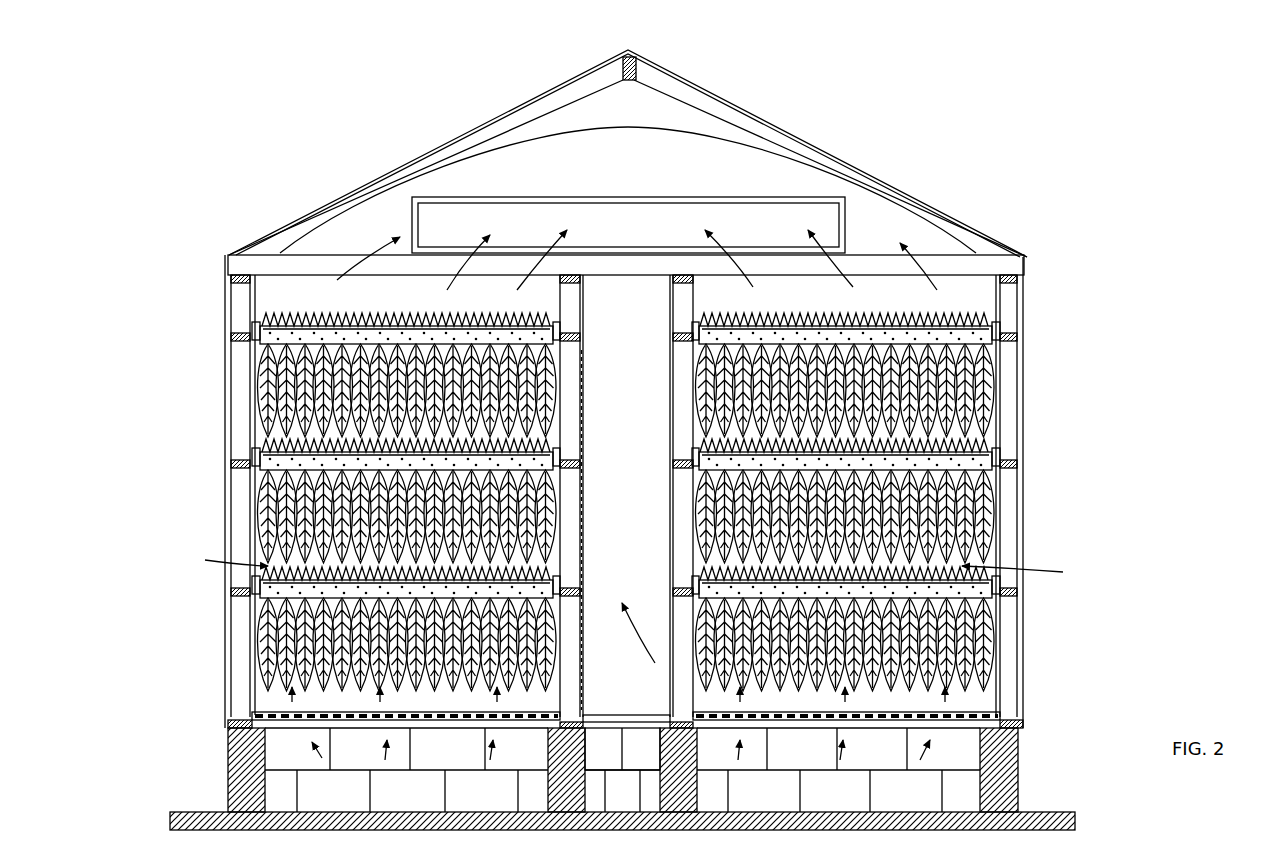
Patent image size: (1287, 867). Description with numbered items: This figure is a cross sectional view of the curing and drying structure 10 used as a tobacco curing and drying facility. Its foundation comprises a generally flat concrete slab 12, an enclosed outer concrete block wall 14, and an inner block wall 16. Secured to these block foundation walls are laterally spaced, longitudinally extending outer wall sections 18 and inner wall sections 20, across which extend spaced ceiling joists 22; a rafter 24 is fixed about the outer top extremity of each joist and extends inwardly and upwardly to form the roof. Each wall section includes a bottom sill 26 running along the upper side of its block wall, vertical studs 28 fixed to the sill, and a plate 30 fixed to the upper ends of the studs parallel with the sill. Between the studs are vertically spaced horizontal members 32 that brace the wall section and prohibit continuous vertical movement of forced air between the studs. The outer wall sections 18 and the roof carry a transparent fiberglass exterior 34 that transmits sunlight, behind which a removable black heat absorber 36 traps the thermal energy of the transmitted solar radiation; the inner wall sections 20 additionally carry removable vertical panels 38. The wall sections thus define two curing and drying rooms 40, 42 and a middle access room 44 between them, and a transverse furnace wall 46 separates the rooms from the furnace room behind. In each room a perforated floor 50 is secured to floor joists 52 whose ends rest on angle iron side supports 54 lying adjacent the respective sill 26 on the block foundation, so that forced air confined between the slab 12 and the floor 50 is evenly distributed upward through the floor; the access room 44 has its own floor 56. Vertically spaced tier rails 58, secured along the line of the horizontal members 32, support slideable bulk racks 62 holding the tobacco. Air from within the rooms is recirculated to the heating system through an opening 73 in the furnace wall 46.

The curing and drying structure 10 is at (445, 78).
The concrete slab 12 is at (211, 827).
The outer concrete block wall 14 is at (230, 758).
The inner block wall 16 is at (542, 770).
The outer wall sections 18 is at (215, 315).
The inner wall sections 20 is at (664, 345).
The ceiling joists 22 is at (870, 268).
The rafter 24 is at (516, 125).
The bottom sill 26 is at (232, 724).
The vertical studs 28 is at (241, 520).
The plate 30 is at (232, 278).
The horizontal members 32 is at (235, 341).
The transparent exterior 34 is at (269, 241).
The heat absorber 36 is at (637, 130).
The vertical panels 38 is at (578, 535).
The curing and drying room 40 is at (223, 558).
The curing and drying room 42 is at (1025, 571).
The access room 44 is at (638, 649).
The furnace wall 46 is at (379, 215).
The perforated floor 50 is at (468, 710).
The floor joist 52 is at (389, 733).
The angle iron side supports 54 is at (298, 730).
The floor 56 is at (622, 749).
The tier rails 58 is at (268, 326).
The bulk racks 62 is at (350, 330).
The opening 73 is at (404, 231).